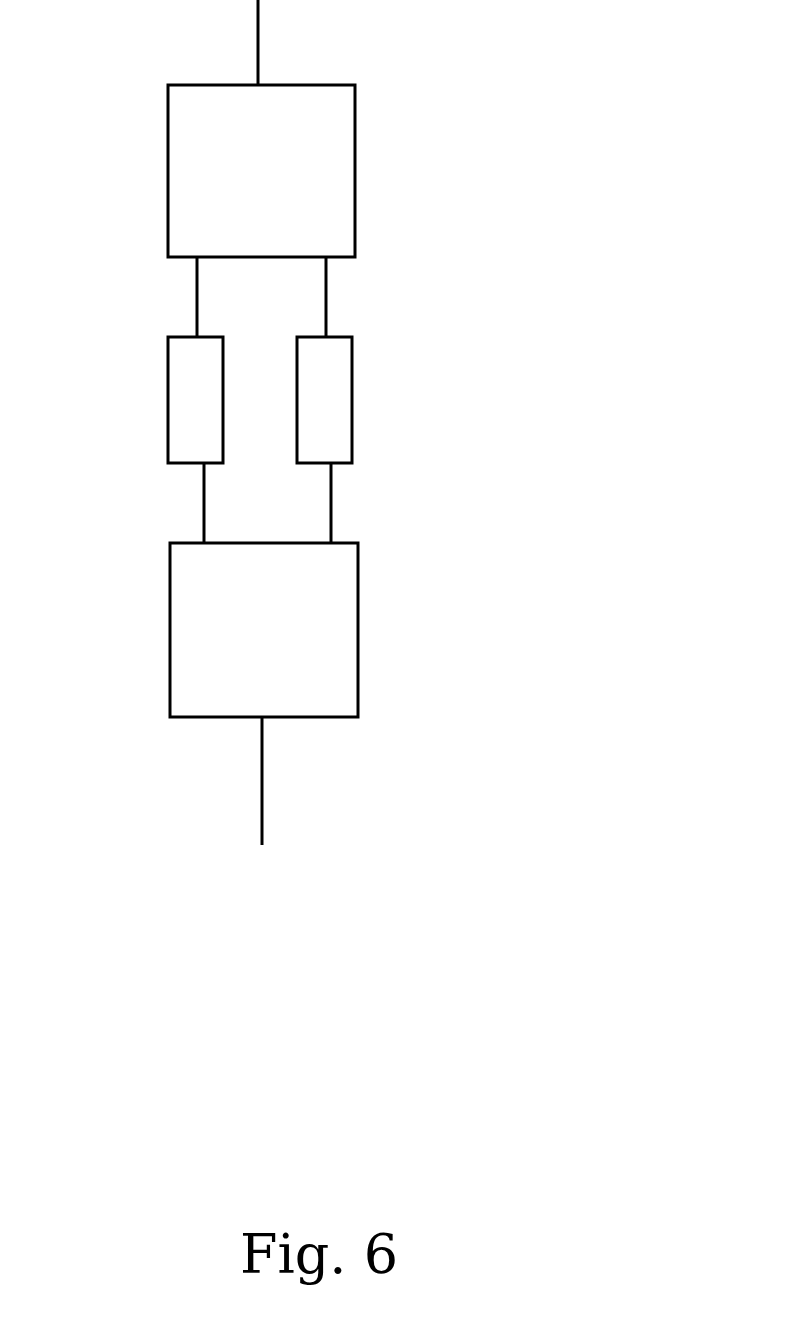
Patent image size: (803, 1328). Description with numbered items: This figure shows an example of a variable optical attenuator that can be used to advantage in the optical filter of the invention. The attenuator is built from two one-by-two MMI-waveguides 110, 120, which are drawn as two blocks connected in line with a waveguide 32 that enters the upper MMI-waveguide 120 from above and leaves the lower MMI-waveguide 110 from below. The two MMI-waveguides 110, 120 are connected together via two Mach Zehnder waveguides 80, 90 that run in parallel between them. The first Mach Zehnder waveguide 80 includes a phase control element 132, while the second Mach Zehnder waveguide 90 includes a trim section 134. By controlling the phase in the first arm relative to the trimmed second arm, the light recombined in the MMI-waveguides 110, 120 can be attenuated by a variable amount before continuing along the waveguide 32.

The waveguide 32 is at (260, 50).
The 1×2 MMI-waveguide 120 is at (335, 193).
The first Mach Zehnder waveguide 80 is at (196, 297).
The second Mach Zehnder waveguide 90 is at (328, 308).
The phase control element 132 is at (183, 400).
The trim section 134 is at (330, 410).
The 1×2 MMI-waveguide 110 is at (218, 707).